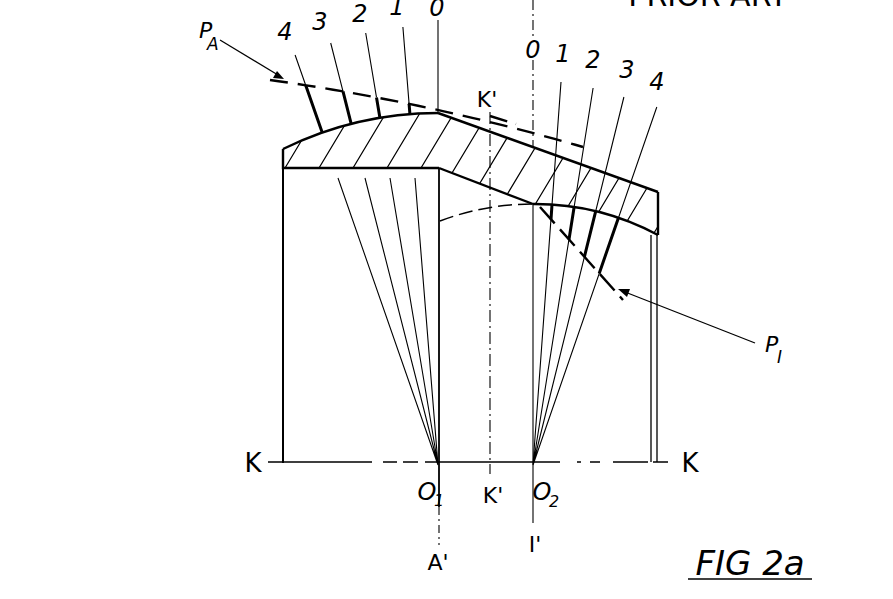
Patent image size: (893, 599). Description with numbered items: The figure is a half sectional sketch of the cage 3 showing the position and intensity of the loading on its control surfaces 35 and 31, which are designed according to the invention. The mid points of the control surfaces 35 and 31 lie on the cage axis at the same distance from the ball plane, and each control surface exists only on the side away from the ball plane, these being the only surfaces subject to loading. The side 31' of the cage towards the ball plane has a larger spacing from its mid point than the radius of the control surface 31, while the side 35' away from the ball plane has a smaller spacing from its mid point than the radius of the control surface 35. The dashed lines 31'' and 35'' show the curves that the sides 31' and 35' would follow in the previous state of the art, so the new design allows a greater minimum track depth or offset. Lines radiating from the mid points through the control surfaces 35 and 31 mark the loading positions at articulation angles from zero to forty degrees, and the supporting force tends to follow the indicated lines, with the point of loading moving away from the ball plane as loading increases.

The cage 3 is at (648, 217).
The control surface 35 is at (306, 127).
The side of the cage away from the ball plane 35' is at (548, 98).
The dashed line 35'' is at (511, 95).
The control surface 31 is at (667, 249).
The side of the cage towards the ball plane 31' is at (486, 239).
The dashed line 31'' is at (486, 245).